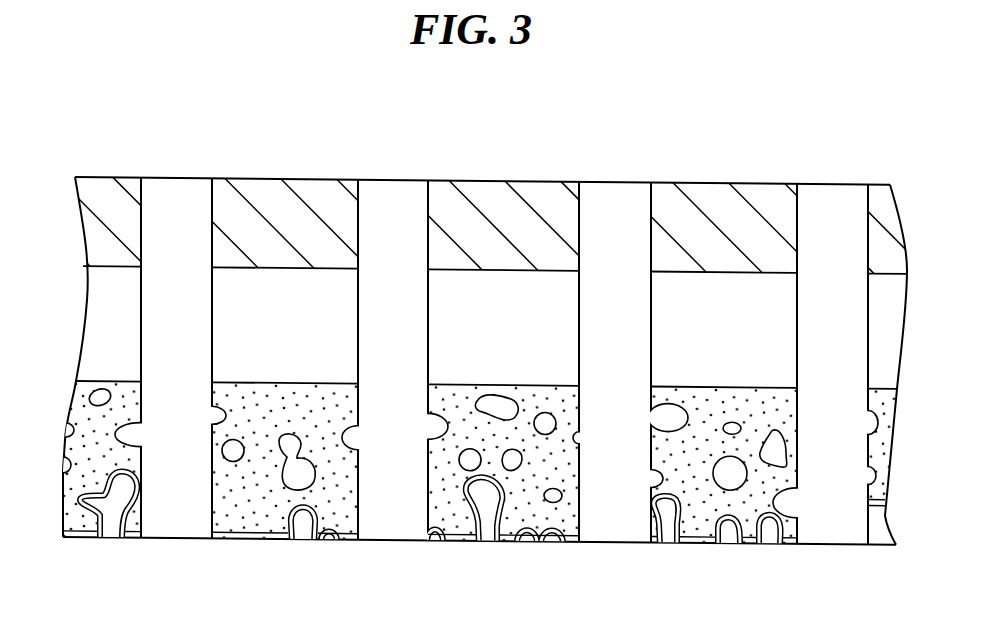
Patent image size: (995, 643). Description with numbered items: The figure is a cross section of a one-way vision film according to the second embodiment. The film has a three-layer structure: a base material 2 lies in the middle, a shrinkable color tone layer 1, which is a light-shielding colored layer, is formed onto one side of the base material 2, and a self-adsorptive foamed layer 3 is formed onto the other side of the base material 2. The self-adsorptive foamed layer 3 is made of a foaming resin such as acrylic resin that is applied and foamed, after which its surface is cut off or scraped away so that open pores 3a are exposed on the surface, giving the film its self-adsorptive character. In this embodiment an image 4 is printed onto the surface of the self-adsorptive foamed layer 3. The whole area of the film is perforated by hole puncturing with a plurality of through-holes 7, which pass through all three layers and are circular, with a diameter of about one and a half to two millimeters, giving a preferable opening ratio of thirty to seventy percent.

The shrinkable color tone layer 1 is at (107, 188).
The base material 2 is at (97, 327).
The self-adsorptive foamed layer 3 is at (82, 447).
The open pores 3a is at (117, 523).
The image 4 is at (102, 537).
The through-holes 7 is at (175, 190).